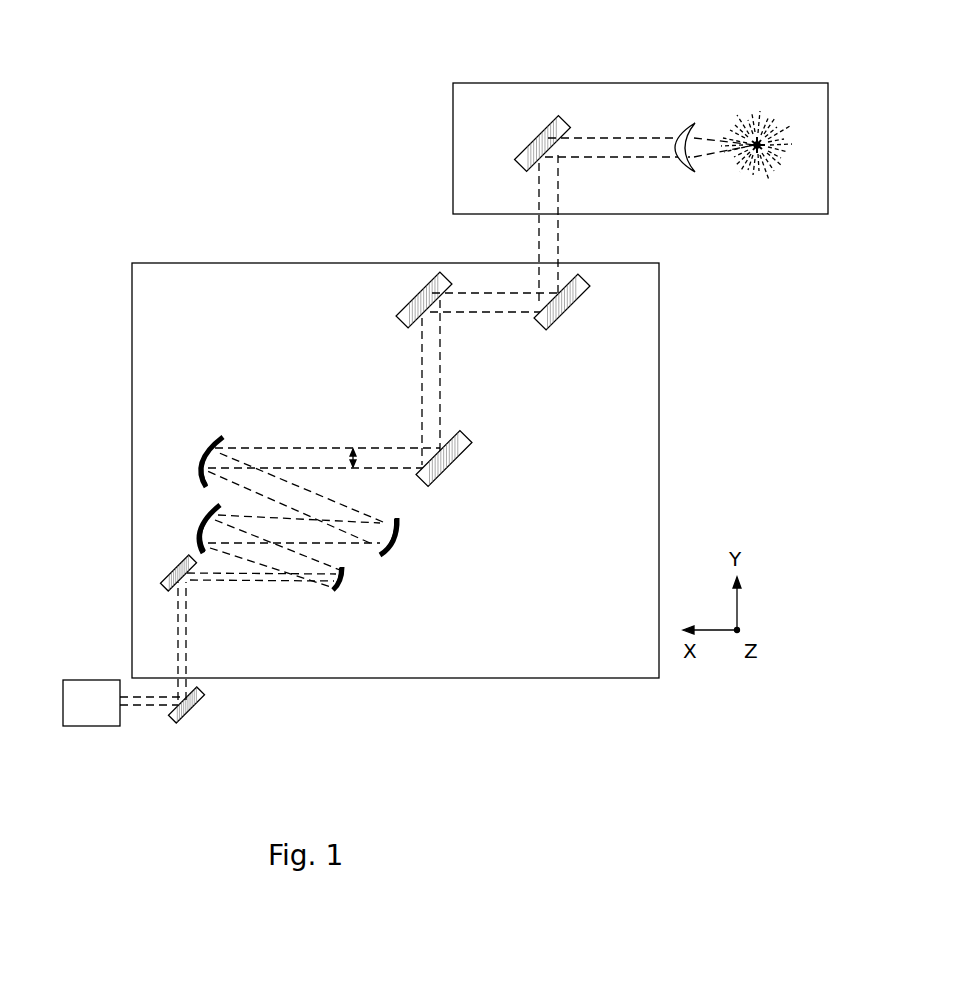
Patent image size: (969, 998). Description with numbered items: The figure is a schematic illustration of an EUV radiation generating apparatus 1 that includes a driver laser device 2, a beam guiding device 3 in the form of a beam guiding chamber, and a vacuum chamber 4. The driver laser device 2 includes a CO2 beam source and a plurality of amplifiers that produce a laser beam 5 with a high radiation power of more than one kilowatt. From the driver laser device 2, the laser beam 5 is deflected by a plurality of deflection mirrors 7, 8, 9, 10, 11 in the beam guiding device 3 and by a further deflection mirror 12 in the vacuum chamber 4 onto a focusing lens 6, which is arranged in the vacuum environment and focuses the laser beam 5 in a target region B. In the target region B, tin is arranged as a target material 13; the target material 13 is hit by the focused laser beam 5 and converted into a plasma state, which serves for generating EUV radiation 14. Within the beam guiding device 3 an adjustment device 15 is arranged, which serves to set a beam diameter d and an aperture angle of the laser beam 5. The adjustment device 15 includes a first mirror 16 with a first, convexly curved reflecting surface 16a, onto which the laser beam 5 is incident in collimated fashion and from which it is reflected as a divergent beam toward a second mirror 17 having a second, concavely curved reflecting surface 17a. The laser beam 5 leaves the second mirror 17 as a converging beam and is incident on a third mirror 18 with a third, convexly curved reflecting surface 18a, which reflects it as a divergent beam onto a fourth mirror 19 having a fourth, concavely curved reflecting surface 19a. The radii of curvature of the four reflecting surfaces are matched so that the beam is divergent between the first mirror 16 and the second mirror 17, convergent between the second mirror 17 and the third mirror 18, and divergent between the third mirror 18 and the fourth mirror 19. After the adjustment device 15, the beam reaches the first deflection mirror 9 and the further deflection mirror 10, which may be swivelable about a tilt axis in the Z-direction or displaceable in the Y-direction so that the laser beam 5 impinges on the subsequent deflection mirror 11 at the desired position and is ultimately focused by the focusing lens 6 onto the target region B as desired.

The EUV radiation generating apparatus 1 is at (330, 100).
The driver laser device 2 is at (90, 692).
The beam guiding device 3 is at (160, 360).
The vacuum chamber 4 is at (498, 93).
The laser beam 5 is at (143, 707).
The focusing lens 6 is at (680, 125).
The deflection mirror 7 is at (190, 710).
The deflection mirror 8 is at (168, 578).
The first deflection mirror 9 is at (455, 476).
The further deflection mirror 10 is at (410, 295).
The deflection mirror 11 is at (578, 290).
The further deflection mirror 12 is at (545, 125).
The target material 13 is at (754, 160).
The EUV radiation 14 is at (748, 120).
The adjustment device 15 is at (250, 436).
The first mirror 16 is at (345, 575).
The first reflecting surface 16a is at (336, 578).
The second mirror 17 is at (203, 517).
The second reflecting surface 17a is at (208, 540).
The third mirror 18 is at (398, 535).
The third reflecting surface 18a is at (372, 550).
The fourth mirror 19 is at (203, 455).
The fourth reflecting surface 19a is at (215, 445).
The target region B is at (760, 138).
The beam diameter d is at (356, 449).